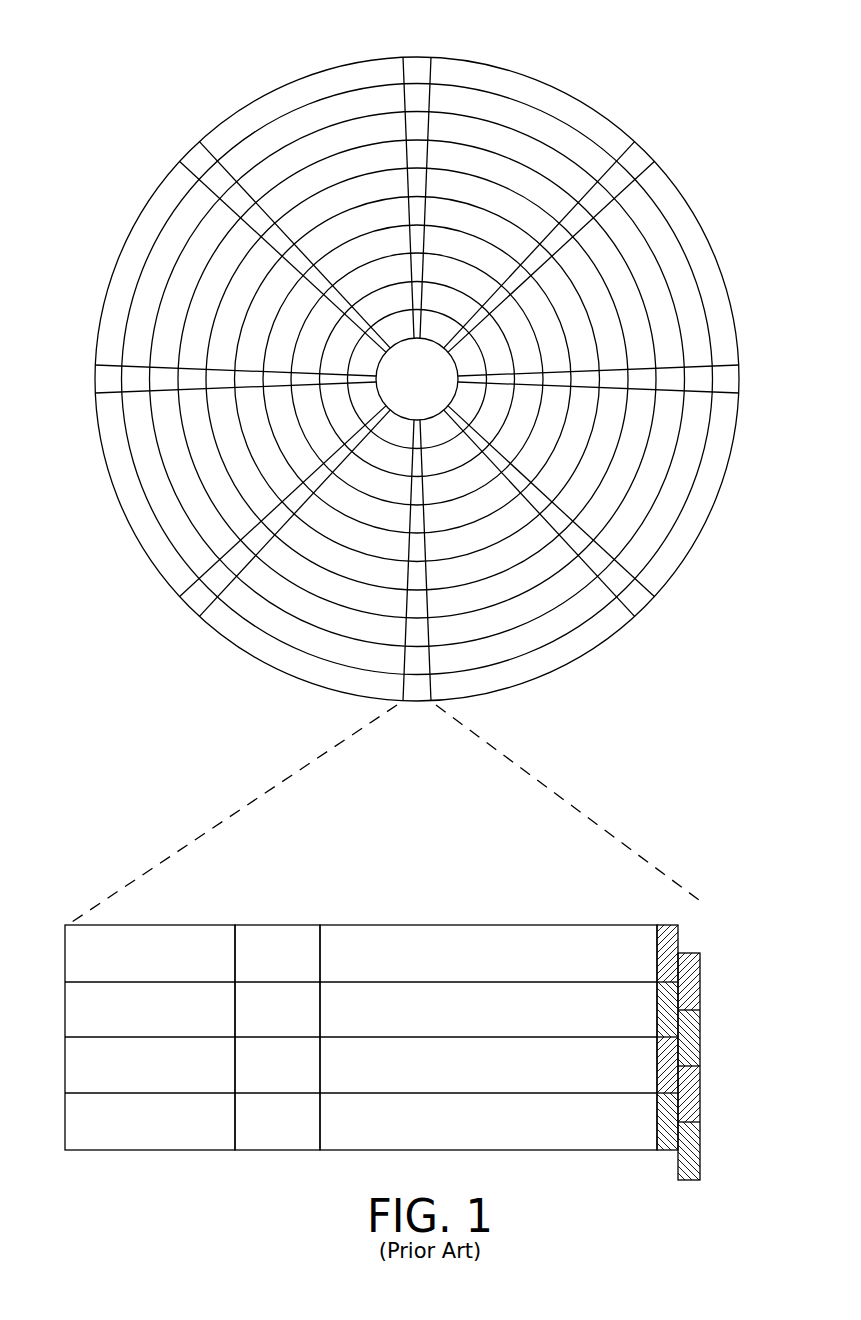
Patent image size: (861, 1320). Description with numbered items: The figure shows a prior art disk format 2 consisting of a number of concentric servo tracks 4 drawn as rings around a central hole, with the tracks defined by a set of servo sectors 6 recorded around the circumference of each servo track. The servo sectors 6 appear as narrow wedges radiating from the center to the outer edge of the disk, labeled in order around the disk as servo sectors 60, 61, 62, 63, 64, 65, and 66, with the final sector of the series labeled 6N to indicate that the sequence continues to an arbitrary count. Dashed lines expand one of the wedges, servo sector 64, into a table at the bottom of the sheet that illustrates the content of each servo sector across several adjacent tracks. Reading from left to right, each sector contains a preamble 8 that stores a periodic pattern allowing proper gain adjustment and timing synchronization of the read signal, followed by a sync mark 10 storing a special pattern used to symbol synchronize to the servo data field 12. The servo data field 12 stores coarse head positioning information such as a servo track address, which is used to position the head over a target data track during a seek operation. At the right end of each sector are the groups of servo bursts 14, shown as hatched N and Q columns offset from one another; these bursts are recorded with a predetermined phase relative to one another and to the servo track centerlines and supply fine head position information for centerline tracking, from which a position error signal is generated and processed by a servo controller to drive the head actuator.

The disk format 2 is at (176, 56).
The servo track 4 is at (527, 122).
The servo sector 6 is at (418, 390).
The servo sector 6_0 60 is at (418, 65).
The servo sector 6_1 61 is at (637, 158).
The servo sector 6_2 62 is at (732, 380).
The servo sector 6_3 63 is at (638, 600).
The servo sector 6_4 64 is at (273, 773).
The servo sector 6_5 65 is at (193, 602).
The servo sector 6_6 66 is at (100, 378).
The servo sector 6_N 6N is at (197, 157).
The preamble 8 is at (160, 925).
The sync mark 10 is at (280, 925).
The servo data field 12 is at (478, 925).
The servo bursts 14 is at (701, 921).